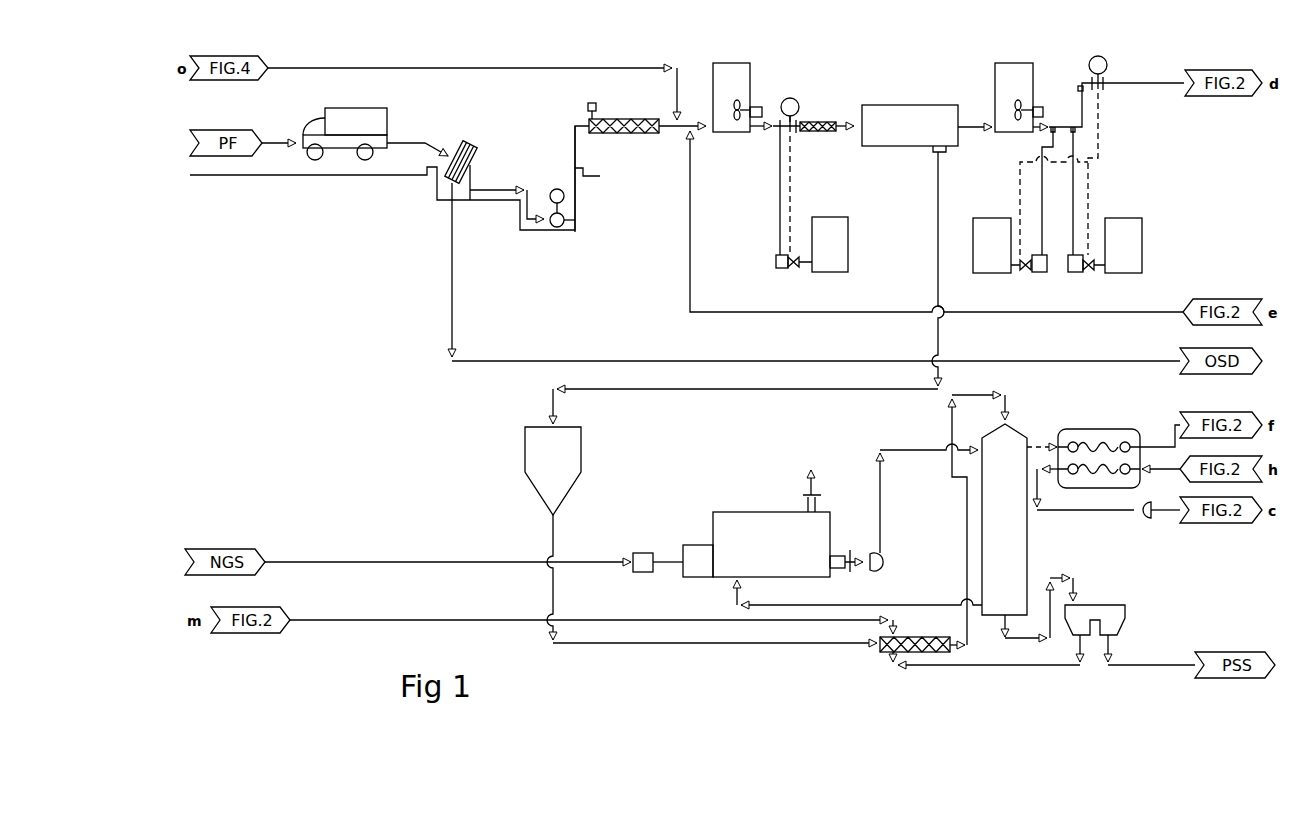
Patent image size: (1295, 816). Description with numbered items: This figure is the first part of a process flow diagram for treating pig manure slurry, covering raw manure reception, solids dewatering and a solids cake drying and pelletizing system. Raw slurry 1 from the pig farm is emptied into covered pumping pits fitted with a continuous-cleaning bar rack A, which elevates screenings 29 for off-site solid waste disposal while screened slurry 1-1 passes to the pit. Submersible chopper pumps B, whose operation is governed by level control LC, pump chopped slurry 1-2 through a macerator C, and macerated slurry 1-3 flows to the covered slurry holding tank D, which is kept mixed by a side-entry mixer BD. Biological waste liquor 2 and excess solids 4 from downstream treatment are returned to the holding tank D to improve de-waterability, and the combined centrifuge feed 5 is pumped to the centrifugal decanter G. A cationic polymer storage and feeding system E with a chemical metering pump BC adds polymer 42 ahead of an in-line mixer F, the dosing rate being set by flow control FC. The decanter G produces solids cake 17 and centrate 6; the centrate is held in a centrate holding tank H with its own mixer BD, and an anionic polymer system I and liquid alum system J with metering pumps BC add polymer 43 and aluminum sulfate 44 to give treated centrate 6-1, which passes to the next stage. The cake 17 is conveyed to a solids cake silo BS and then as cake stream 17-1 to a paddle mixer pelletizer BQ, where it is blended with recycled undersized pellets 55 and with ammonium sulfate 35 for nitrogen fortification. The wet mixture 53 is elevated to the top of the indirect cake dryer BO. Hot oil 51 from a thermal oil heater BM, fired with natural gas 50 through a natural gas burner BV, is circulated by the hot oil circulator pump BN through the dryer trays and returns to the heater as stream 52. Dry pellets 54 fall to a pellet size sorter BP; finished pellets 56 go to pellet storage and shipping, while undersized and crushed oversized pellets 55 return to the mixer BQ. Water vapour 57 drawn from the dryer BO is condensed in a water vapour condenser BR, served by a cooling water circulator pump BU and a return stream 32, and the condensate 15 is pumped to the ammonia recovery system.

The raw slurry 1 is at (356, 134).
The screened slurry 1-1 is at (507, 194).
The chopped slurry 1-2 is at (590, 179).
The macerated slurry 1-3 is at (678, 111).
The waste liquor 2 is at (293, 57).
The excess solids waste line 4 is at (748, 179).
The centrifuge feed 5 is at (845, 137).
The centrate 6 is at (975, 117).
The treated centrate 6-1 is at (1108, 97).
The condensate 15 is at (1108, 482).
The solids cake 17 is at (748, 288).
The cake stream 17-1 is at (712, 579).
The screenings 29 is at (816, 272).
The ammonium sulfate line 32 is at (1161, 480).
The ammonium sulfate 35 is at (591, 616).
The cationic polymer addition line 42 is at (766, 195).
The polymer addition line 43 is at (1037, 191).
The aluminum sulfate addition line 44 is at (1063, 191).
The natural gas 50 is at (448, 552).
The hot oil 51 is at (894, 498).
The oil return stream 52 is at (859, 592).
The mixture 53 is at (972, 520).
The pellets 54 is at (1039, 608).
The undersized and crushed oversized pellets 55 is at (986, 661).
The pellets within size specification 56 is at (1151, 650).
The water vapor 57 is at (1042, 433).
The bar rack A is at (461, 185).
The chopper pump B is at (555, 213).
The level control LC is at (552, 192).
The macerator C is at (623, 115).
The slurry holding tank D is at (731, 97).
The side-entry mixer BD is at (906, 101).
The flow control FC is at (944, 145).
The in-line mixer F is at (818, 115).
The centrifugal decanter G is at (910, 128).
The centrate holding tank H is at (1014, 97).
The chemical metering pump BC is at (937, 278).
The cationic polymer storage and feeding system E is at (830, 244).
The anionic polymer holding and feeding system I is at (992, 245).
The liquid alum storage and feeding system J is at (1123, 245).
The solids cake silo BS is at (553, 471).
The natural gas burner BV is at (656, 577).
The thermal oil heater BM is at (773, 536).
The hot oil circulator pump BN is at (892, 563).
The indirect cake dryer BO is at (1004, 519).
The water vapour condenser BR is at (1099, 447).
The condenser cooling water circulator pump BU is at (1139, 524).
The pellet size sorter BP is at (1095, 608).
The paddle mixer pelletizer BQ is at (915, 635).